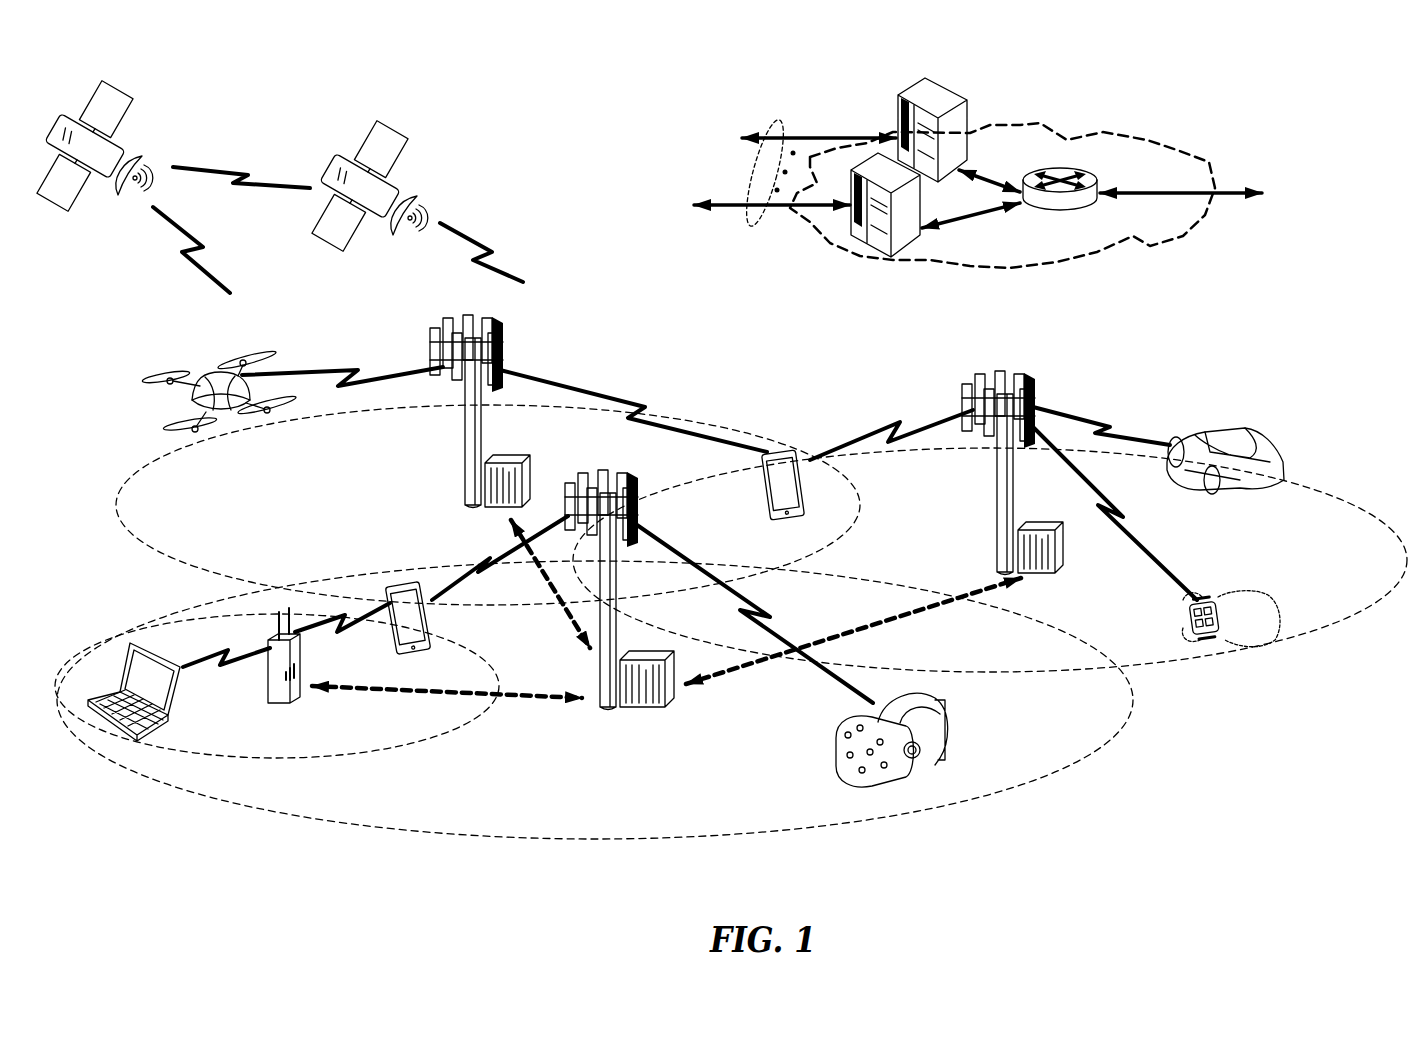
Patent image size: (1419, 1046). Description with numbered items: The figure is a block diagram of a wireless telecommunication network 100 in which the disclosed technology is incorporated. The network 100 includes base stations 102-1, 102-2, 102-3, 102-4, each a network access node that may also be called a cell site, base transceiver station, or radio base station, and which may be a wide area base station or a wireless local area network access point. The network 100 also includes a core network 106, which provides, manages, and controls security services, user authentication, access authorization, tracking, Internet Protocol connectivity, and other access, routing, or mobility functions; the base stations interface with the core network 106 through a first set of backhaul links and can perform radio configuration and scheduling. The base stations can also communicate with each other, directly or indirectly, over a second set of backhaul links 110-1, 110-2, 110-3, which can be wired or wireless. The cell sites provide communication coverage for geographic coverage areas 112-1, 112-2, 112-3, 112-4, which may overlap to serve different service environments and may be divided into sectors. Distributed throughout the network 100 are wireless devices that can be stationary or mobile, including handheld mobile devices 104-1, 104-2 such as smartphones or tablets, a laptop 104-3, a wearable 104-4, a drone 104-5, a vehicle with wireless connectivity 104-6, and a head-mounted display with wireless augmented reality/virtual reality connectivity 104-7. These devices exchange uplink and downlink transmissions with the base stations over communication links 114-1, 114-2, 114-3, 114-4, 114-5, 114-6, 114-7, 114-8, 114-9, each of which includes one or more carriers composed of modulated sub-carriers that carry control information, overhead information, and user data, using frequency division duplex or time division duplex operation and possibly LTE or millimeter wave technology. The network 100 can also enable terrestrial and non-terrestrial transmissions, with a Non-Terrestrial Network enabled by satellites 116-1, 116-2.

The wireless telecommunication network 100 is at (1337, 108).
The base station 102-1 is at (608, 708).
The base station 102-2 is at (463, 452).
The base station 102-3 is at (1000, 492).
The base station 102-4 is at (270, 690).
The handheld mobile device 104-1 is at (427, 630).
The handheld mobile device 104-2 is at (767, 483).
The laptop 104-3 is at (117, 737).
The wearable 104-4 is at (1198, 593).
The drone 104-5 is at (228, 420).
The vehicle with wireless connectivity 104-6 is at (1258, 440).
The head-mounted display 104-7 is at (952, 720).
The core network 106 is at (1092, 260).
The backhaul link 110-1 is at (337, 688).
The backhaul link 110-2 is at (918, 612).
The backhaul link 110-3 is at (568, 610).
The geographic coverage area 112-1 is at (533, 842).
The geographic coverage area 112-2 is at (412, 750).
The geographic coverage area 112-3 is at (177, 560).
The geographic coverage area 112-4 is at (1355, 478).
The communication link 114-1 is at (770, 617).
The communication link 114-2 is at (482, 560).
The communication link 114-3 is at (195, 665).
The communication link 114-4 is at (343, 632).
The communication link 114-5 is at (353, 370).
The communication link 114-6 is at (640, 400).
The communication link 114-7 is at (900, 423).
The communication link 114-8 is at (1122, 525).
The communication link 114-9 is at (1103, 425).
The satellite 116-1 is at (138, 158).
The satellite 116-2 is at (418, 200).